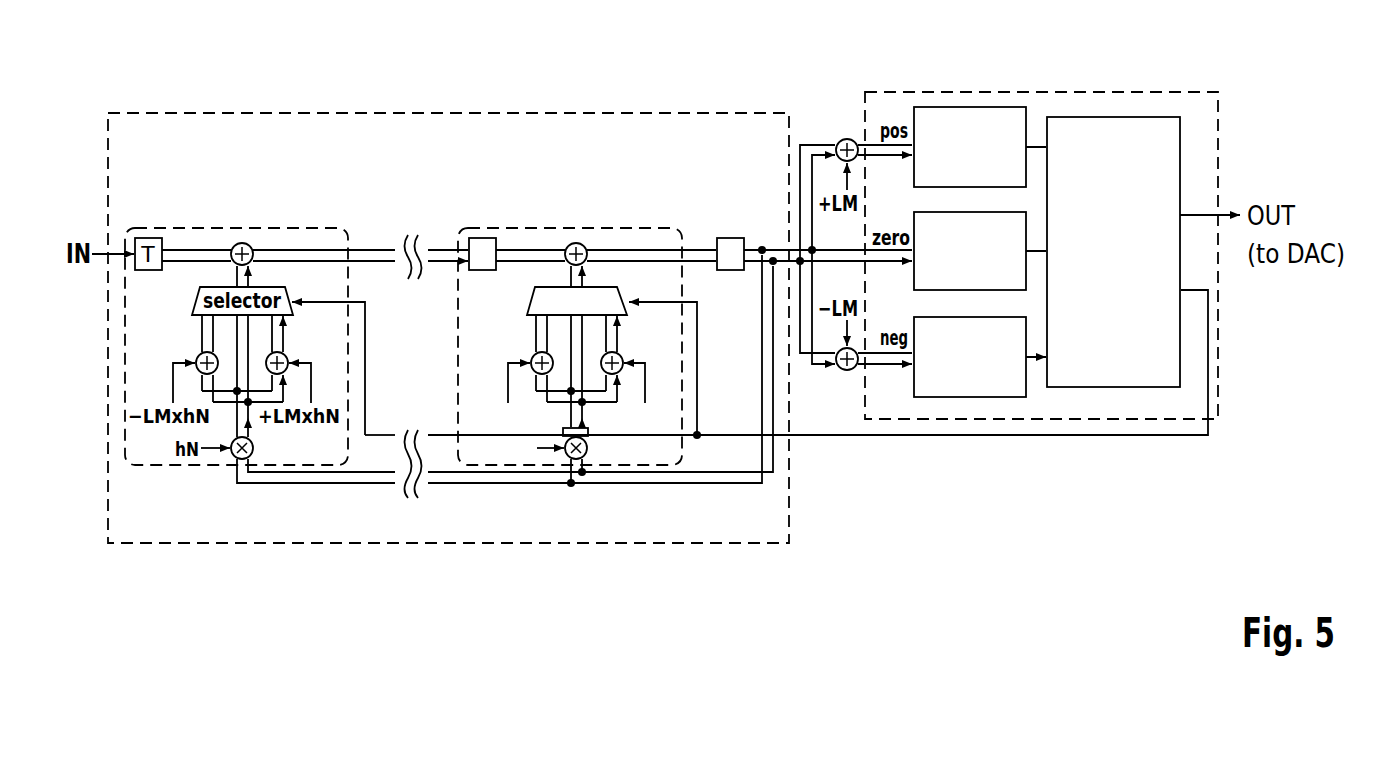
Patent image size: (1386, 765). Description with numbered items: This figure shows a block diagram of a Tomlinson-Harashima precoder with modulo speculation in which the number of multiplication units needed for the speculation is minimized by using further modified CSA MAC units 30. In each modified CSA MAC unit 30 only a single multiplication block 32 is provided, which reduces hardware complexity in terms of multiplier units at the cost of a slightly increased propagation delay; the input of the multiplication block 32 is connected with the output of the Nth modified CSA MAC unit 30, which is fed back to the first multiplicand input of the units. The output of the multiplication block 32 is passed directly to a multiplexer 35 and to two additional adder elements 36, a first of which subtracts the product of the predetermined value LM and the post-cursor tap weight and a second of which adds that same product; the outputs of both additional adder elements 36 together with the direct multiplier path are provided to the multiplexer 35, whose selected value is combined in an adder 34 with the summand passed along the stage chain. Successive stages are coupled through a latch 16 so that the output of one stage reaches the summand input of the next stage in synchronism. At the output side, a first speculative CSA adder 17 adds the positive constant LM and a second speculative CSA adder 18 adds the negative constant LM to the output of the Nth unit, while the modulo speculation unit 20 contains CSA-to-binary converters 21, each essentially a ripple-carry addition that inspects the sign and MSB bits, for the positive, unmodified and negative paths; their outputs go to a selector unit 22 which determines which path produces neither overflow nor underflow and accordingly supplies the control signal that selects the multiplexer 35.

The latch 16 is at (730, 238).
The first speculative CSA adder 17 is at (847, 138).
The second speculative CSA adder 18 is at (847, 371).
The modulo speculation unit 20 is at (1088, 90).
The CSA-to-binary converter 21 is at (972, 106).
The selector unit 22 is at (1145, 117).
The modified CSA MAC unit 30 is at (632, 228).
The multiplication block 32 is at (588, 450).
The adder 34 is at (575, 243).
The multiplexer 35 is at (529, 300).
The additional adder element 36 is at (532, 358).